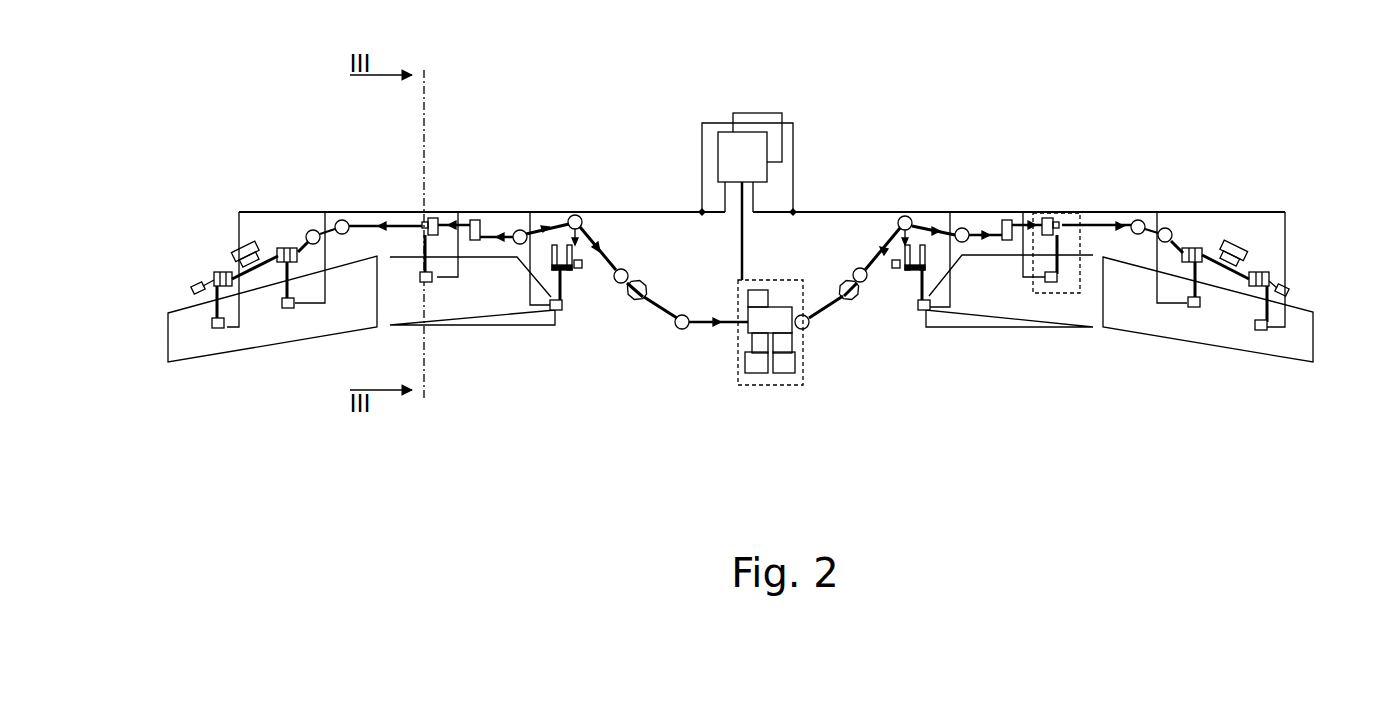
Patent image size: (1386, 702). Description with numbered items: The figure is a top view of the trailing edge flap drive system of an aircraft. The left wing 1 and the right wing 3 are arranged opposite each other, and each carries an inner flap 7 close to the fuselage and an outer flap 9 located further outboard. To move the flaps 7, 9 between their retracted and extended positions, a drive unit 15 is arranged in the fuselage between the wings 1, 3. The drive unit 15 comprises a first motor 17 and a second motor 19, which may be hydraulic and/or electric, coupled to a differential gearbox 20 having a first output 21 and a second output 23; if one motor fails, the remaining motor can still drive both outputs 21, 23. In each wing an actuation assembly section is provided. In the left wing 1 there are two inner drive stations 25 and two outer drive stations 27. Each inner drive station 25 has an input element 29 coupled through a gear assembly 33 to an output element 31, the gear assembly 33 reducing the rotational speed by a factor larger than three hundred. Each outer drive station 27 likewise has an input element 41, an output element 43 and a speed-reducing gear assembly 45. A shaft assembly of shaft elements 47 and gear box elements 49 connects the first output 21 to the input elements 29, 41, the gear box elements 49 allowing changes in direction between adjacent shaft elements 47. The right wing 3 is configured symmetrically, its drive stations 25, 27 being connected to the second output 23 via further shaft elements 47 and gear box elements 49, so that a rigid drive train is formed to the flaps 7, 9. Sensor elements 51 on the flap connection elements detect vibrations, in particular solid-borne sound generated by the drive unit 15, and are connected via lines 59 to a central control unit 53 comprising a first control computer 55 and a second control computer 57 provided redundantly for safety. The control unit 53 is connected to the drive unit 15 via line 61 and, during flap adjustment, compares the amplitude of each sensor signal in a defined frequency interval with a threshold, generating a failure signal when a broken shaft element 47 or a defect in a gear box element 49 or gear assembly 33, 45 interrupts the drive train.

The left wing 1 is at (360, 200).
The right wing 3 is at (1132, 203).
The inner flap 7 is at (470, 328).
The outer flap 9 is at (265, 335).
The drive unit 15 is at (838, 216).
The first motor 17 is at (757, 373).
The second motor 19 is at (783, 373).
The differential gearbox 20 is at (746, 335).
The first output 21 is at (752, 325).
The second output 23 is at (806, 329).
The inner drive station 25 is at (428, 215).
The outer drive station 27 is at (217, 272).
The input element 29 is at (440, 216).
The output element 31 is at (421, 225).
The gear assembly 33 is at (441, 224).
The input element 41 is at (226, 272).
The output element 43 is at (198, 284).
The gear assembly 45 is at (220, 306).
The shaft element 47 is at (492, 231).
The gear box element 49 is at (577, 215).
The sensor element 51 is at (217, 330).
The central control unit 53 is at (740, 85).
The first control computer 55 is at (780, 113).
The second control computer 57 is at (765, 170).
The lines 59 is at (636, 212).
The line 61 is at (745, 233).